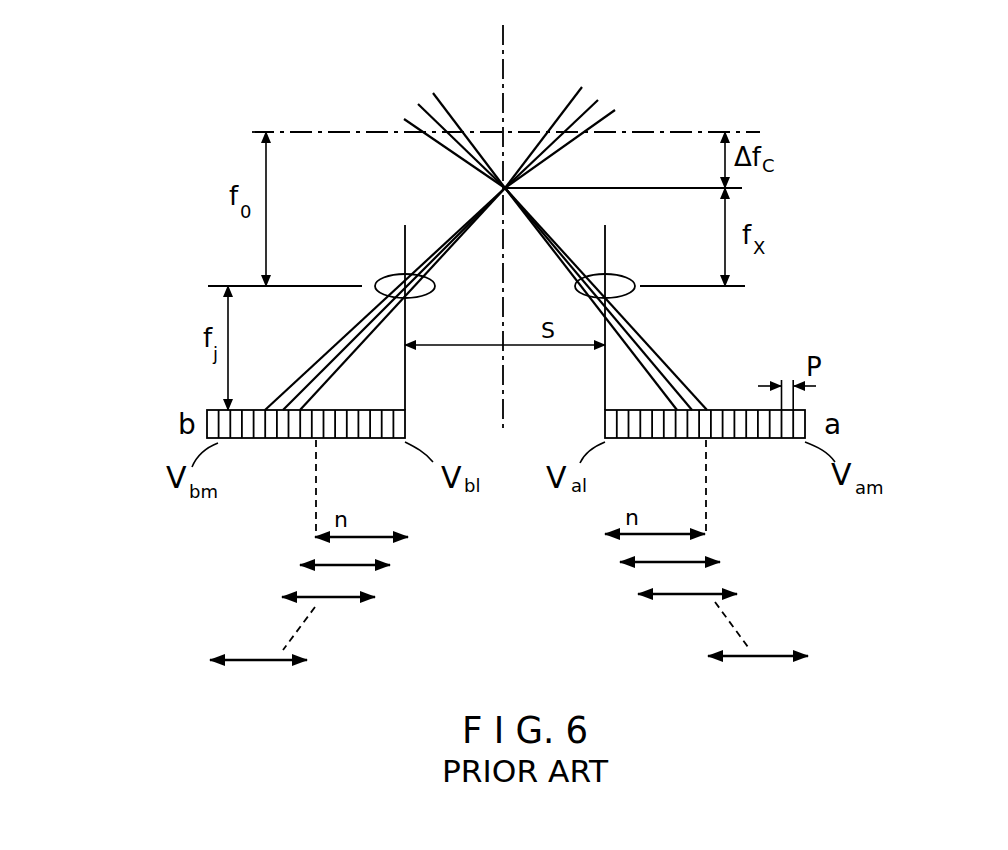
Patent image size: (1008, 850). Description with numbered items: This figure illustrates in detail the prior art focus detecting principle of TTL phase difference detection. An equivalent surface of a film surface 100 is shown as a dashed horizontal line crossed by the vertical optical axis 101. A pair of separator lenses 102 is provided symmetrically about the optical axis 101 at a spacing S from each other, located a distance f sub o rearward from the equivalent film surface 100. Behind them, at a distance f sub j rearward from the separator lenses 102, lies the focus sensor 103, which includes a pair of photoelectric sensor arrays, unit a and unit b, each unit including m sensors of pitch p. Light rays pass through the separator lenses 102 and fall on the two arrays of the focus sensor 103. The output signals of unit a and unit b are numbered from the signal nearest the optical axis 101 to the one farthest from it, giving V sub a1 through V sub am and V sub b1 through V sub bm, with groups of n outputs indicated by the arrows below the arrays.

The film surface 100 is at (300, 130).
The optical axis 101 is at (504, 83).
The separator lenses 102 is at (380, 281).
The focus sensor 103 is at (257, 408).